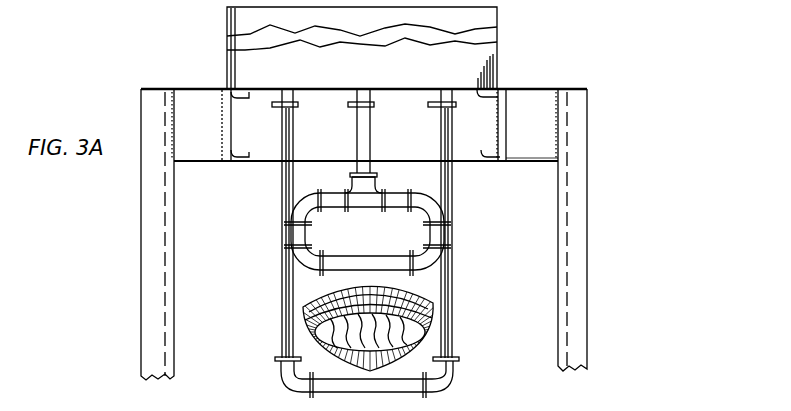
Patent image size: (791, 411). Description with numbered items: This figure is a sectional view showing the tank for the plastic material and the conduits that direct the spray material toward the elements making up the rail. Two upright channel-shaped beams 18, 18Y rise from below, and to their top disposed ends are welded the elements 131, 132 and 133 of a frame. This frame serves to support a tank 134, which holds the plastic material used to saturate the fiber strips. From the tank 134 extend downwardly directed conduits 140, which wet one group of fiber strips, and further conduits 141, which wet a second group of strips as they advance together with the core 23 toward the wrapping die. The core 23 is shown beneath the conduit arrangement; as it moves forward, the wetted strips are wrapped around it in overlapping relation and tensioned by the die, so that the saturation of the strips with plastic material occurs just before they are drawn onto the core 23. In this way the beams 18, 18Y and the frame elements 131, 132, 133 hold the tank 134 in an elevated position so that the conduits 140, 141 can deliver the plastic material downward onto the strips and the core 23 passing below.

The upright channel-shaped beam 18 is at (143, 178).
The upright channel-shaped beam 18Y is at (580, 171).
The core 23 is at (400, 333).
The frame element 131 is at (506, 118).
The frame element 132 is at (221, 117).
The frame element 133 is at (527, 153).
The tank 134 is at (498, 52).
The conduit 140 is at (296, 233).
The conduit 141 is at (285, 295).